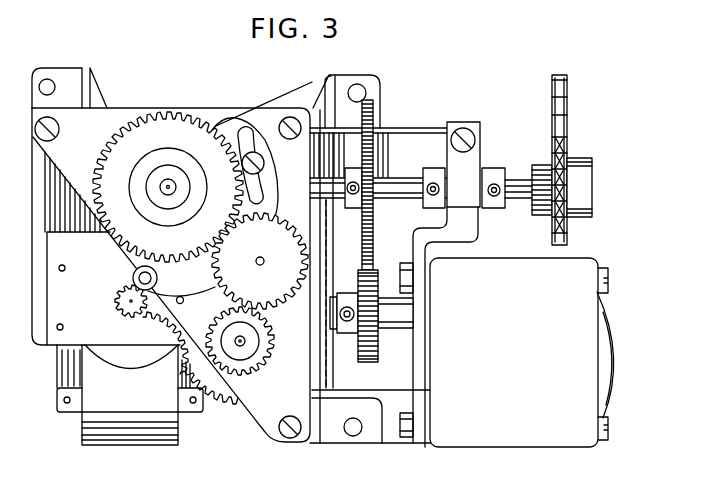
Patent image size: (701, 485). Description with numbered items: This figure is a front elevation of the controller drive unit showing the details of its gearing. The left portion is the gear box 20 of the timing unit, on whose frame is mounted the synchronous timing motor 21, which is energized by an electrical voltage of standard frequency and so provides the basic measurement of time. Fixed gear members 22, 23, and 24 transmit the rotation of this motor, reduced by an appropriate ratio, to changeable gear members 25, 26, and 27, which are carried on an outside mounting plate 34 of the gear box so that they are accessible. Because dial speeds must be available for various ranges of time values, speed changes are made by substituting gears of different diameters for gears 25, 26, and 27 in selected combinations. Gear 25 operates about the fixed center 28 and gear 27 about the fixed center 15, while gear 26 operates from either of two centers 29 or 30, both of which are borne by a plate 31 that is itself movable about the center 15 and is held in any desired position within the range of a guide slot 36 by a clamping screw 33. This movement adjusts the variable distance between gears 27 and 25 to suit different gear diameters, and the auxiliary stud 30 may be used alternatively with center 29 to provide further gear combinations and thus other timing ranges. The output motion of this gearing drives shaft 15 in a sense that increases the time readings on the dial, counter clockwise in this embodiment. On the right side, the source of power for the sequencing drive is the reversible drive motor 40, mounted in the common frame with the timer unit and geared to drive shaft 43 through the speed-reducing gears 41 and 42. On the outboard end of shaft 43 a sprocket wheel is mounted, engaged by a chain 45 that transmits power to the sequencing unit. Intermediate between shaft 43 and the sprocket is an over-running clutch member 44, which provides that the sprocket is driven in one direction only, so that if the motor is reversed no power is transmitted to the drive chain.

The shaft 15 is at (172, 186).
The gear box 20 is at (250, 93).
The synchronous timing motor 21 is at (87, 427).
The fixed gear member 22 is at (128, 310).
The fixed gear member 23 is at (160, 325).
The fixed gear member 24 is at (216, 394).
The changeable gear member 25 is at (253, 362).
The changeable gear member 26 is at (282, 295).
The changeable gear member 27 is at (107, 187).
The fixed center 28 is at (244, 341).
The center 29 is at (264, 261).
The auxiliary stud 30 is at (134, 278).
The plate 31 is at (272, 195).
The clamping screw 33 is at (260, 167).
The outside mounting plate 34 is at (267, 412).
The guide slot 36 is at (243, 133).
The drive motor 40 is at (513, 351).
The speed-reducing gear 41 is at (373, 353).
The speed-reducing gear 42 is at (377, 168).
The shaft 43 is at (520, 183).
The clutch member 44 is at (583, 195).
The chain 45 is at (565, 113).